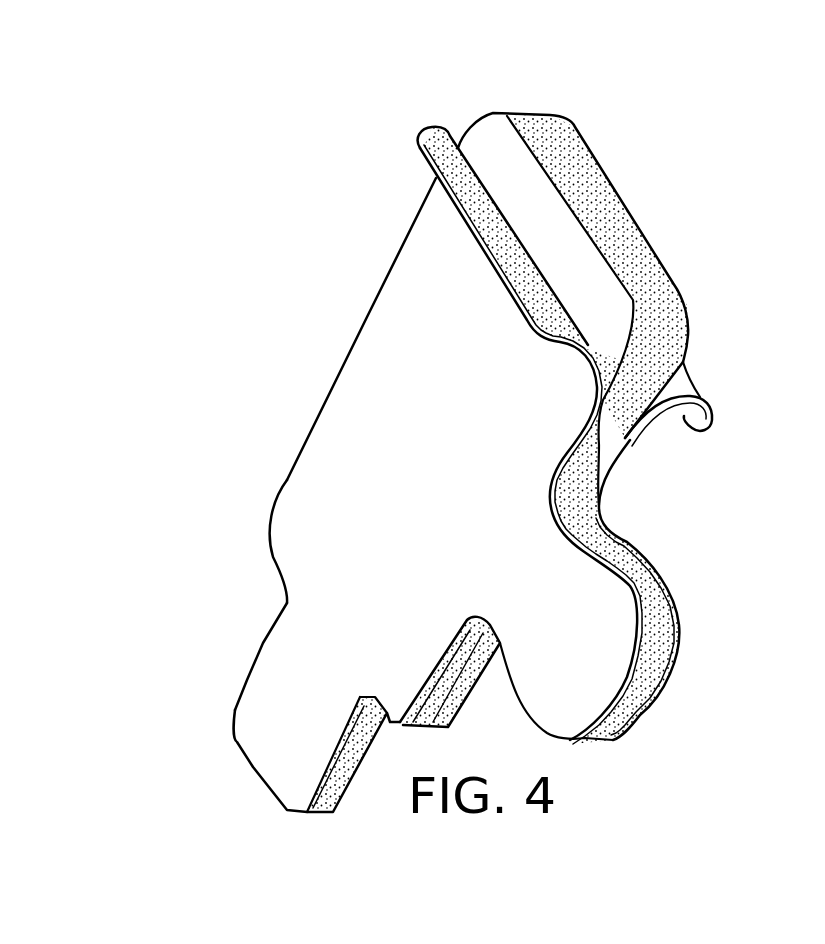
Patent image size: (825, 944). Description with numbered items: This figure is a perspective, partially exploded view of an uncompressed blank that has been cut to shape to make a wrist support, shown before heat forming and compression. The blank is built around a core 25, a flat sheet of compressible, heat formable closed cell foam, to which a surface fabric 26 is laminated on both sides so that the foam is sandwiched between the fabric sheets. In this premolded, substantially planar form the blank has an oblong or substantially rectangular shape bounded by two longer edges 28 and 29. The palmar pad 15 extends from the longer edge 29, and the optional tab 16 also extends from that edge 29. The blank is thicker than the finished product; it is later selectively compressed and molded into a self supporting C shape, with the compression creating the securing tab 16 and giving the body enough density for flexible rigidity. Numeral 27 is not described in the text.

The palmar pad 15 is at (657, 690).
The securing tab 16 is at (253, 768).
The core 25 is at (607, 207).
The surface fabric 26 is at (423, 162).
The plate body 27 is at (367, 317).
The longer edge 28 is at (630, 440).
The longer edge 29 is at (270, 553).